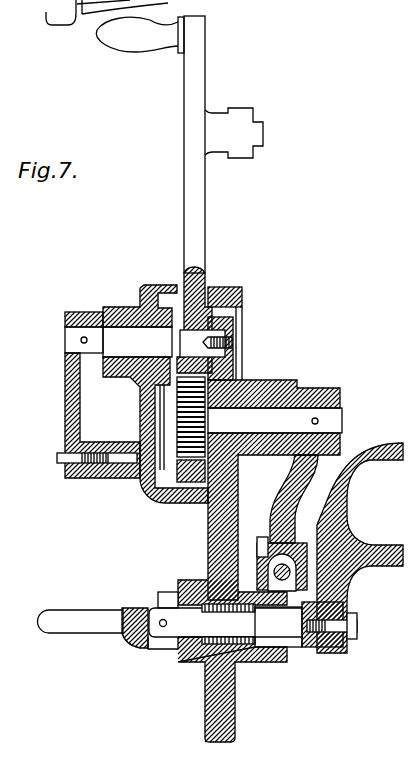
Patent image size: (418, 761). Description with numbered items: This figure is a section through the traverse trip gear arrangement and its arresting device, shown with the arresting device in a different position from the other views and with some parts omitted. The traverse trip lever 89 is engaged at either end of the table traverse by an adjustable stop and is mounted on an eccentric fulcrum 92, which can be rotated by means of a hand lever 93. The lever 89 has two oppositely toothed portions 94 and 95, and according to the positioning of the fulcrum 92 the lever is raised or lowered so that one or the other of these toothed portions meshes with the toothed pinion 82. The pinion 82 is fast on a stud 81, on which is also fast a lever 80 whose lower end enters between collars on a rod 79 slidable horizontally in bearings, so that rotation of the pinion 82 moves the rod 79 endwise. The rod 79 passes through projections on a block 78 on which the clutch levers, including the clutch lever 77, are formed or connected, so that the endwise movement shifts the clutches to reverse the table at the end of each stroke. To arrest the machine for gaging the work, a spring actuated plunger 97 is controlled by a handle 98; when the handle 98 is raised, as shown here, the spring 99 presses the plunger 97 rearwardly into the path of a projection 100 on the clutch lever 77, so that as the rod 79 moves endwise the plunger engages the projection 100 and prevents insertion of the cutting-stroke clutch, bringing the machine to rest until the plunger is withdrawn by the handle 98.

The clutch lever 77 is at (345, 497).
The block 78 is at (266, 545).
The rod 79 is at (258, 567).
The lever 80 is at (290, 484).
The stud 81 is at (310, 406).
The toothed pinion 82 is at (170, 406).
The traverse trip lever 89 is at (188, 222).
The eccentric fulcrum 92 is at (216, 340).
The hand lever 93 is at (64, 366).
The toothed portion 94 is at (214, 366).
The toothed portion 95 is at (150, 482).
The spring actuated plunger 97 is at (293, 634).
The handle 98 is at (101, 628).
The spring 99 is at (192, 660).
The projection 100 is at (312, 648).